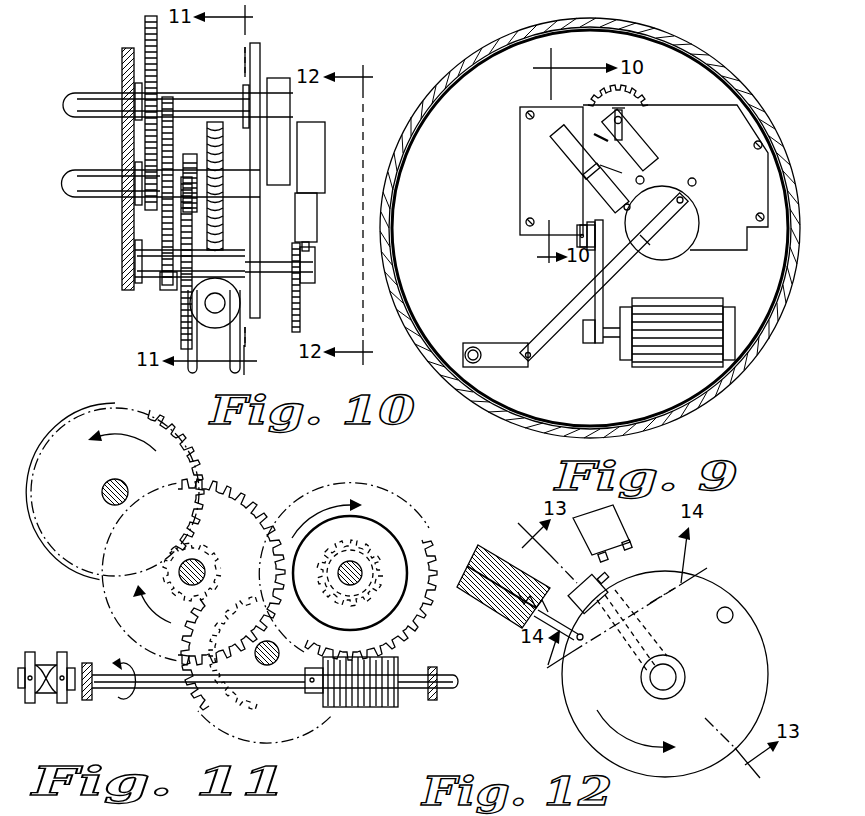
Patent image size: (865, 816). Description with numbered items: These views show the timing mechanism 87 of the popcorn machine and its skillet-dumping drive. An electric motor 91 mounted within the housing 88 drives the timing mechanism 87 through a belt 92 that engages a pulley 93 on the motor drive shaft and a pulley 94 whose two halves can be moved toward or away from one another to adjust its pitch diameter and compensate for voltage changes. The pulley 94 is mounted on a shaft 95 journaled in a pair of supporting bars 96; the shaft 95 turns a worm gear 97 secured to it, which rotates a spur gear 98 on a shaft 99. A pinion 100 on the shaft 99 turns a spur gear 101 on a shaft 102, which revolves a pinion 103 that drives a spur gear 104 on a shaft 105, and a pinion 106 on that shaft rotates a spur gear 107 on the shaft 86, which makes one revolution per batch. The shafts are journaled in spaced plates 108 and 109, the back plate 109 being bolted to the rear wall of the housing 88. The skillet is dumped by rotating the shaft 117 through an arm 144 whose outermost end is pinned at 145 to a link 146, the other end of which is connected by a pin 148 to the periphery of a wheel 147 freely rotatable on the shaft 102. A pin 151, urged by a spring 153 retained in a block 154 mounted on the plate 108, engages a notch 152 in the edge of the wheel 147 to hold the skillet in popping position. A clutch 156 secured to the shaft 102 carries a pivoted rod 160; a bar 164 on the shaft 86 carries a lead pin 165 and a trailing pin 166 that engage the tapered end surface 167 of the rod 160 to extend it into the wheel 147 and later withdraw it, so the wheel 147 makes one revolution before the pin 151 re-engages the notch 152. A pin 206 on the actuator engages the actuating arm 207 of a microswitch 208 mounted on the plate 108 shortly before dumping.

In FIG. 10, the shaft 86 is at (122, 95).
In FIG. 9, the shaft 86 is at (624, 118).
In FIG. 11, the shaft 86 is at (113, 480).
In FIG. 9, the timing mechanism 87 is at (514, 182).
In FIG. 9, the housing 88 is at (447, 82).
In FIG. 9, the electric motor 91 is at (668, 366).
In FIG. 10, the belt 92 is at (245, 355).
In FIG. 9, the belt 92 is at (601, 305).
In FIG. 9, the pulley 93 is at (588, 343).
In FIG. 10, the pulley 94 is at (238, 305).
In FIG. 9, the pulley 94 is at (589, 250).
In FIG. 11, the pulley 94 is at (48, 703).
In FIG. 9, the shaft 95 is at (590, 222).
In FIG. 11, the shaft 95 is at (180, 690).
In FIG. 11, the supporting bars 96 is at (90, 700).
In FIG. 11, the worm gear 97 is at (370, 707).
In FIG. 10, the spur gear 98 is at (207, 143).
In FIG. 11, the spur gear 98 is at (390, 642).
In FIG. 9, the shaft 99 is at (697, 182).
In FIG. 11, the shaft 99 is at (362, 570).
In FIG. 11, the pinion 100 is at (388, 590).
In FIG. 10, the spur gear 101 is at (181, 306).
In FIG. 11, the spur gear 101 is at (183, 628).
In FIG. 10, the shaft 102 is at (155, 280).
In FIG. 11, the shaft 102 is at (255, 660).
In FIG. 12, the shaft 102 is at (685, 678).
In FIG. 11, the pinion 103 is at (235, 697).
In FIG. 10, the spur gear 104 is at (162, 230).
In FIG. 11, the spur gear 104 is at (248, 500).
In FIG. 10, the shaft 105 is at (122, 172).
In FIG. 9, the shaft 105 is at (590, 178).
In FIG. 11, the shaft 105 is at (205, 582).
In FIG. 10, the pinion 106 is at (190, 183).
In FIG. 11, the pinion 106 is at (213, 543).
In FIG. 10, the spur gear 107 is at (157, 60).
In FIG. 9, the spur gear 107 is at (640, 92).
In FIG. 11, the spur gear 107 is at (197, 476).
In FIG. 10, the plate 108 is at (258, 45).
In FIG. 9, the plate 108 is at (663, 105).
In FIG. 10, the back plate 109 is at (122, 252).
In FIG. 9, the back plate 109 is at (537, 107).
In FIG. 9, the shaft 117 is at (485, 347).
In FIG. 9, the arm 144 is at (490, 367).
In FIG. 9, the pin 145 is at (530, 360).
In FIG. 9, the link 146 is at (582, 280).
In FIG. 10, the wheel 147 is at (300, 322).
In FIG. 9, the wheel 147 is at (699, 240).
In FIG. 12, the wheel 147 is at (765, 655).
In FIG. 9, the pin 148 is at (684, 200).
In FIG. 12, the pin 148 is at (734, 612).
In FIG. 9, the pin 151 is at (630, 206).
In FIG. 12, the pin 151 is at (581, 642).
In FIG. 12, the notch 152 is at (610, 632).
In FIG. 12, the spring 153 is at (520, 610).
In FIG. 10, the block 154 is at (318, 233).
In FIG. 9, the block 154 is at (590, 197).
In FIG. 12, the block 154 is at (483, 607).
In FIG. 9, the clutch 156 is at (650, 237).
In FIG. 12, the rod 160 is at (652, 612).
In FIG. 10, the bar 164 is at (283, 79).
In FIG. 9, the bar 164 is at (658, 157).
In FIG. 12, the bar 164 is at (627, 520).
In FIG. 9, the lead pin 165 is at (644, 183).
In FIG. 12, the lead pin 165 is at (632, 546).
In FIG. 9, the trailing pin 166 is at (620, 168).
In FIG. 12, the trailing pin 166 is at (607, 559).
In FIG. 12, the tapered end surface 167 is at (587, 582).
In FIG. 9, the pin 206 is at (645, 138).
In FIG. 9, the actuating arm 207 is at (597, 134).
In FIG. 10, the microswitch 208 is at (325, 147).
In FIG. 9, the microswitch 208 is at (575, 163).